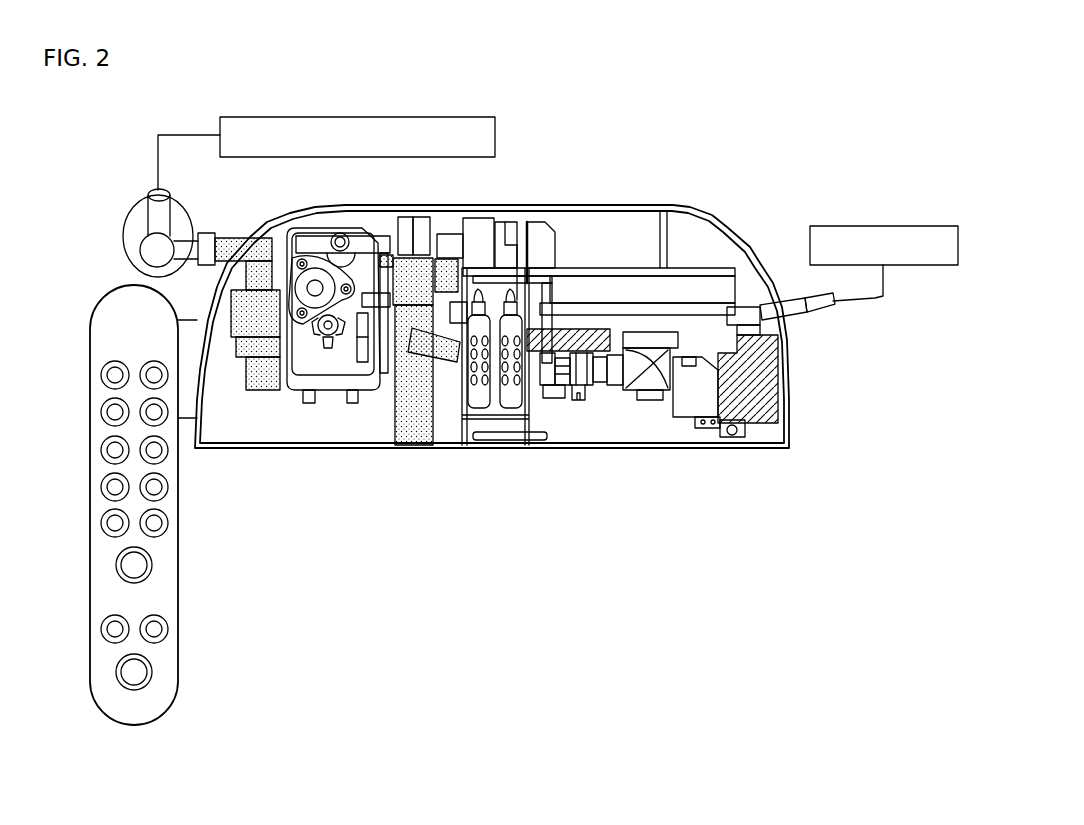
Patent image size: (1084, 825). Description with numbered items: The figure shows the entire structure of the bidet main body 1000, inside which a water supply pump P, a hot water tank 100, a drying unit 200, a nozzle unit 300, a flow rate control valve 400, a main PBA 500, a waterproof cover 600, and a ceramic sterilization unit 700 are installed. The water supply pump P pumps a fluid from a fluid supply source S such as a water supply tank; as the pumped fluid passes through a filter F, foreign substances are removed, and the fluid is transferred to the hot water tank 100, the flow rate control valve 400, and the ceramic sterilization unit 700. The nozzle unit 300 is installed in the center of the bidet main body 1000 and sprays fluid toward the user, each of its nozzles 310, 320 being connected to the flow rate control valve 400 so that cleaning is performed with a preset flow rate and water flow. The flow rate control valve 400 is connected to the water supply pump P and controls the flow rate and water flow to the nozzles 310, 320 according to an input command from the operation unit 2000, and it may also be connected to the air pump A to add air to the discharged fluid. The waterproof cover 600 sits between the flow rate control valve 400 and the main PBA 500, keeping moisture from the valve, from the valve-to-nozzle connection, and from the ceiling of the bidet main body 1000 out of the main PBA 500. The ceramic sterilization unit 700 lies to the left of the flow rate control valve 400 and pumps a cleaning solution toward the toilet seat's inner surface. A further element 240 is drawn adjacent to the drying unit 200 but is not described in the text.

The hot water tank 100 is at (353, 232).
The drying unit 200 is at (428, 258).
The filter member 240 is at (413, 448).
The nozzle unit 300 is at (500, 432).
The nozzle 310 is at (477, 412).
The nozzle 320 is at (519, 414).
The flow rate control valve 400 is at (602, 397).
The main PBA 500 is at (703, 320).
The waterproof cover 600 is at (650, 400).
The ceramic sterilization unit 700 is at (687, 410).
The bidet main body 1000 is at (515, 327).
The operation unit 2000 is at (178, 598).
The water supply pump P is at (265, 382).
The filter F is at (124, 243).
The fluid supply source S is at (495, 134).
The air pump A is at (885, 225).